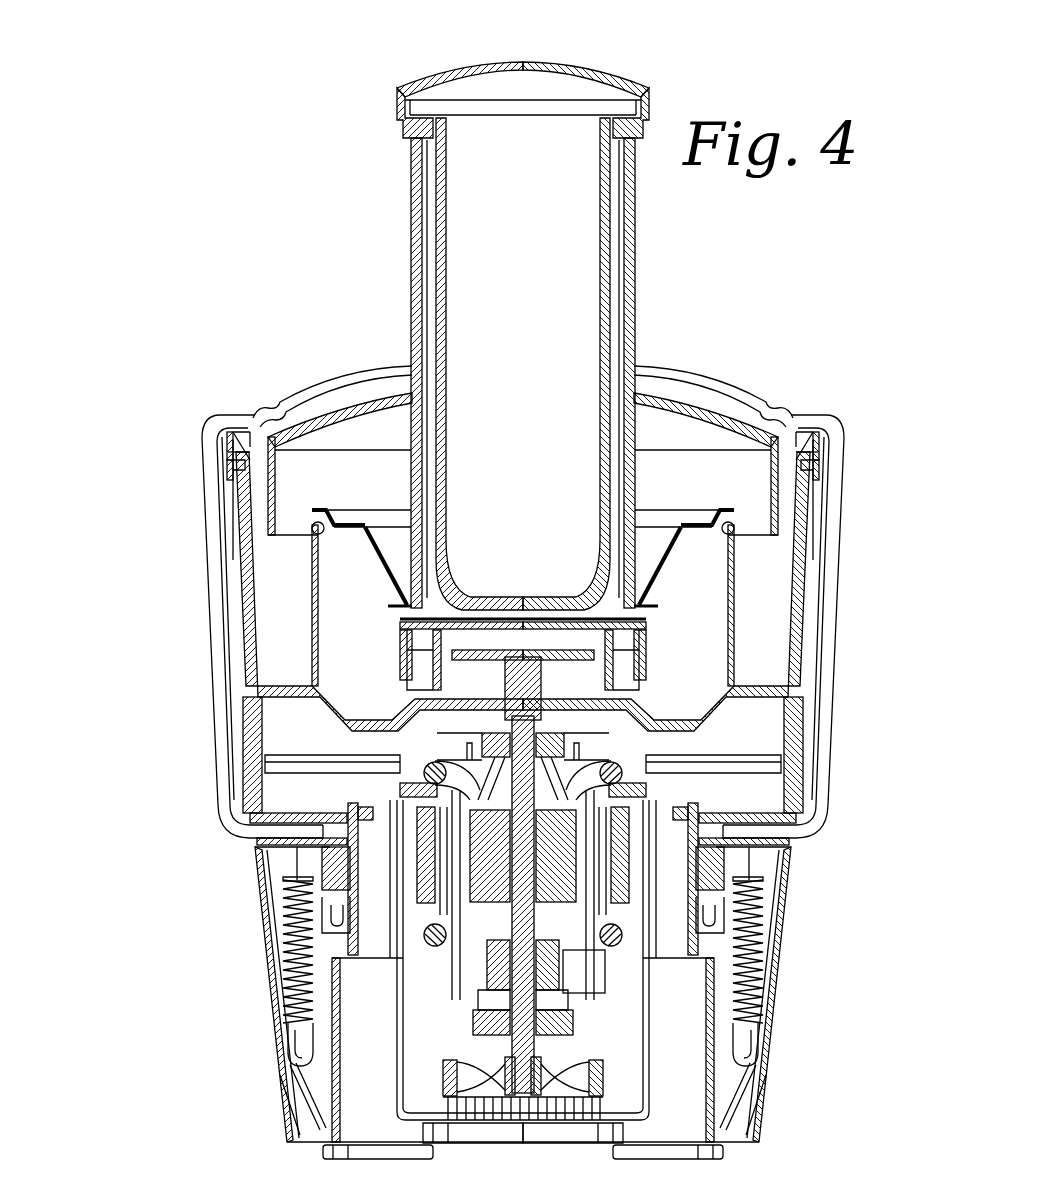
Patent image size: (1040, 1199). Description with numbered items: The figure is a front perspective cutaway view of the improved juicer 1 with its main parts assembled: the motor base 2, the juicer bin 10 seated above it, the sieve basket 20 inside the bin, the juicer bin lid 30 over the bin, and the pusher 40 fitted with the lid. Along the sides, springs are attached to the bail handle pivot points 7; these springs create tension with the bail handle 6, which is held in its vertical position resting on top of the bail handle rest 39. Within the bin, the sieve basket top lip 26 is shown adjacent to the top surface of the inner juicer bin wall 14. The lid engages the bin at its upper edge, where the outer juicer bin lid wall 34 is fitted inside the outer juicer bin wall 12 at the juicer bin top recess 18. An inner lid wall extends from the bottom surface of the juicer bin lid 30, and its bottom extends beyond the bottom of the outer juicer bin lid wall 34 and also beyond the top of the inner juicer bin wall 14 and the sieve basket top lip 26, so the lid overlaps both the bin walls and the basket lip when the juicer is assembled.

The improved juicer 1 is at (375, 262).
The motor base 2 is at (285, 1025).
The bail handle 6 is at (205, 620).
The bail handle pivot points 7 is at (253, 840).
The juicer bin 10 is at (832, 641).
The outer juicer bin wall 12 is at (235, 580).
The inner juicer bin wall 14 is at (313, 547).
The juicer bin top recess 18 is at (238, 508).
The sieve basket 20 is at (690, 563).
The sieve basket top lip 26 is at (735, 510).
The juicer bin lid 30 is at (648, 395).
The outer juicer bin lid wall 34 is at (232, 465).
The bail handle rest 39 is at (238, 460).
The pusher 40 is at (440, 320).